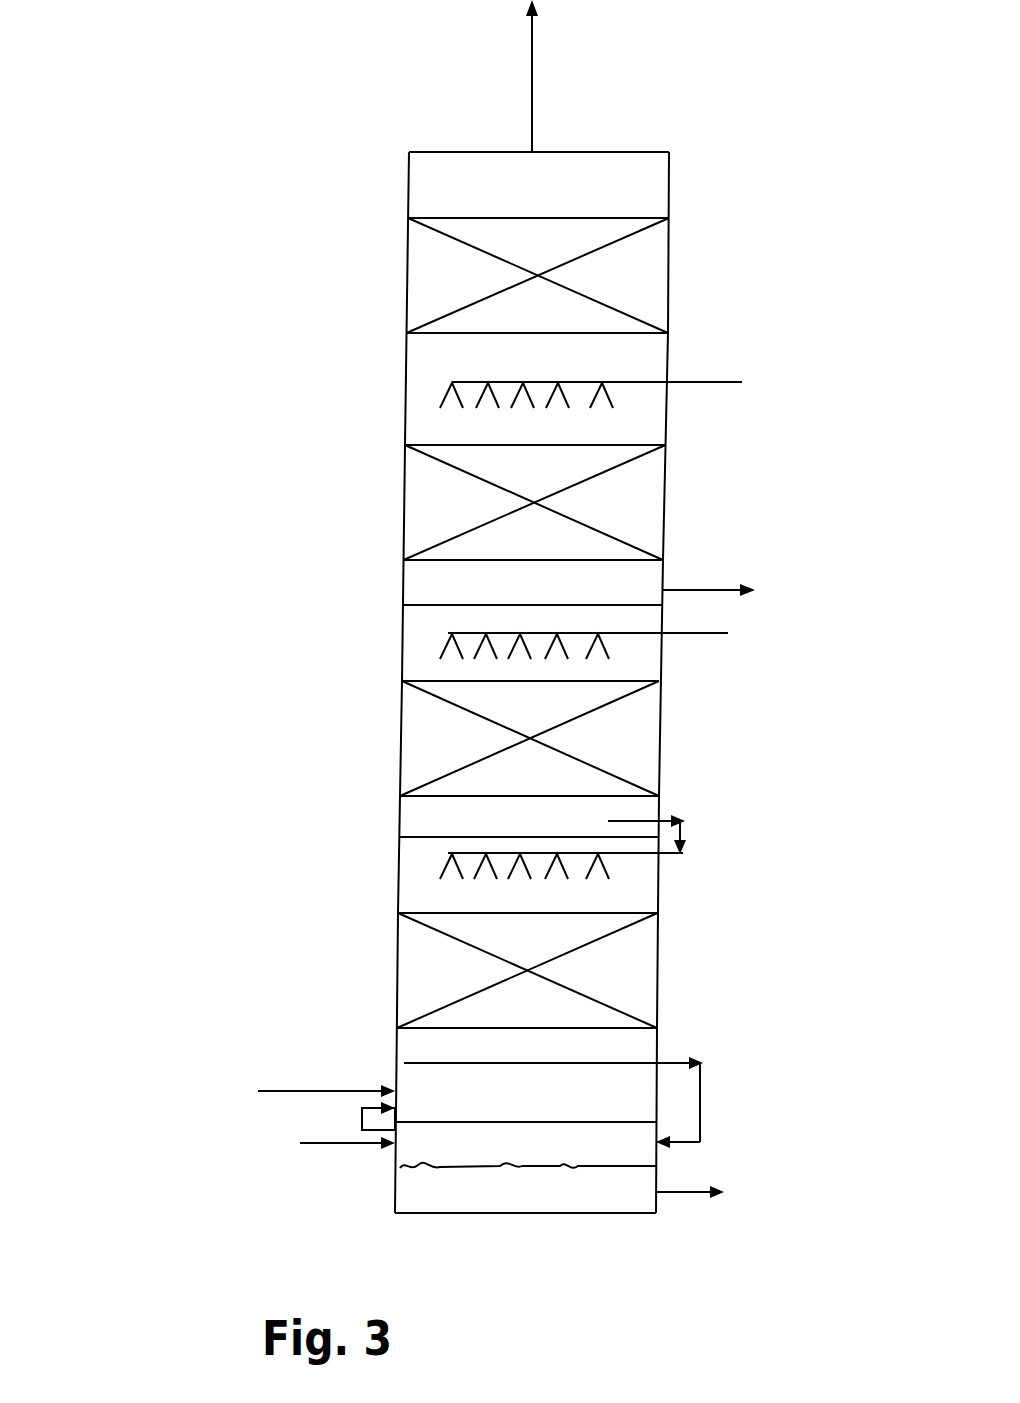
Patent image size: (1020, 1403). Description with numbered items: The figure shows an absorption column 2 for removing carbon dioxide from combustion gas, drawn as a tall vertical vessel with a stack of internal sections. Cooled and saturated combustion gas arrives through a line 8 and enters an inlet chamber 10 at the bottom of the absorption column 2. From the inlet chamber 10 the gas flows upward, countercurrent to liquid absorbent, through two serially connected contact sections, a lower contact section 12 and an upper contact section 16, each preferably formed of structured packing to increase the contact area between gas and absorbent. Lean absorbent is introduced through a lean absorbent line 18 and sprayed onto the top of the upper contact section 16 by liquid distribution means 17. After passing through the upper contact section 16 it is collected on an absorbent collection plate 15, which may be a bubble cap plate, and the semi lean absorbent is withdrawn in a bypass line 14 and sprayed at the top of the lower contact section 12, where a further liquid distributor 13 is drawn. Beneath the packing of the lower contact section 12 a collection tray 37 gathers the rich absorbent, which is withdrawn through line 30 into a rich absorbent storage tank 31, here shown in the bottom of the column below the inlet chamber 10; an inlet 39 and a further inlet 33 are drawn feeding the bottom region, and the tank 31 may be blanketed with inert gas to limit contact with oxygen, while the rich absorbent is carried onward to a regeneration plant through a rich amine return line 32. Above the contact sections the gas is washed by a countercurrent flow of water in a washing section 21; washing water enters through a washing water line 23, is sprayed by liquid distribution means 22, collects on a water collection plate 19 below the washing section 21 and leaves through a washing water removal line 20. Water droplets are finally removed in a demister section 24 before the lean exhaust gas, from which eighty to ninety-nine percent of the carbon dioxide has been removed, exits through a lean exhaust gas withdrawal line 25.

The absorption column 2 is at (212, 277).
The line 8 is at (300, 1092).
The inlet chamber 10 is at (502, 1106).
The lower contact section 12 is at (451, 984).
The liquid distributor 13 is at (450, 862).
The bypass line 14 is at (685, 845).
The absorbent collection plate 15 is at (400, 837).
The upper contact section 16 is at (452, 753).
The liquid distribution means 17 is at (612, 657).
The lean absorbent line 18 is at (728, 633).
The water collection plate 19 is at (449, 612).
The washing water removal line 20 is at (695, 583).
The washing section 21 is at (457, 516).
The liquid distribution means 22 is at (443, 402).
The washing water line 23 is at (712, 381).
The demister section 24 is at (457, 296).
The lean exhaust gas withdrawal line 25 is at (538, 43).
The line 30 is at (755, 1000).
The rich absorbent storage tank 31 is at (466, 1171).
The rich amine return line 32 is at (722, 1195).
The inlet line 33 is at (343, 1150).
The collection tray 37 is at (421, 1063).
The venting line 39 is at (362, 1120).